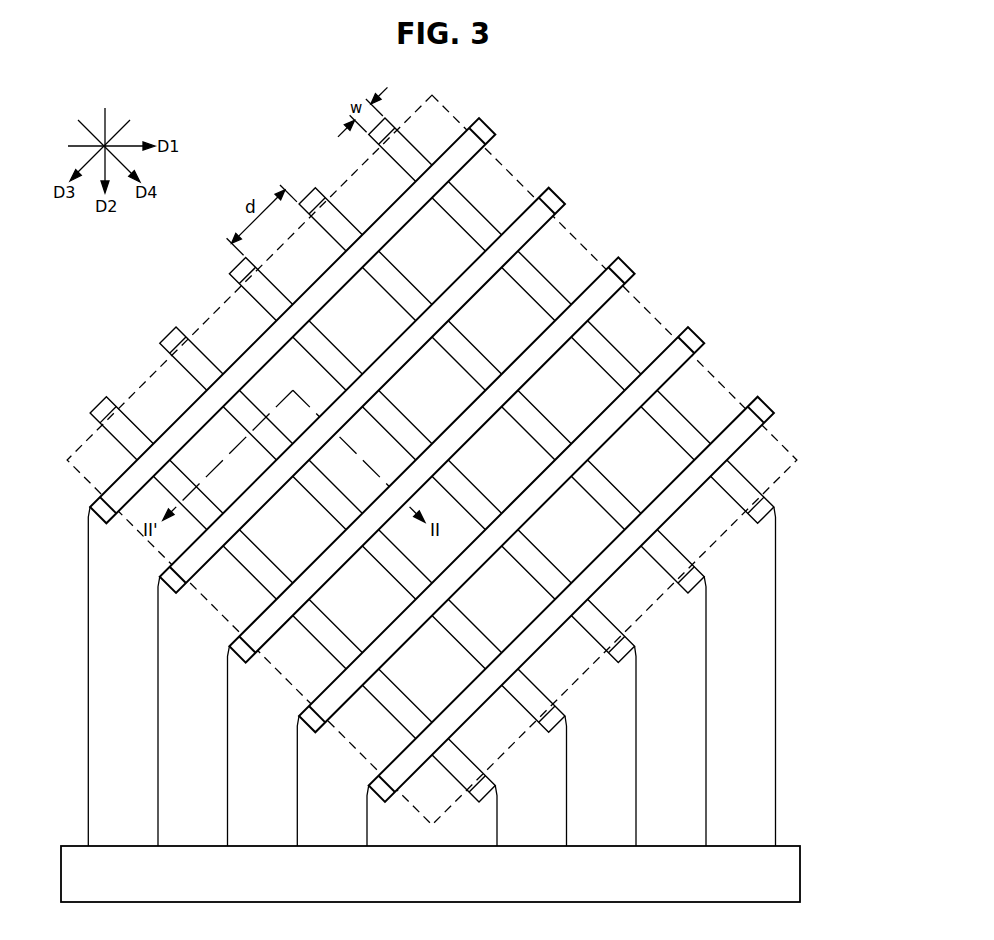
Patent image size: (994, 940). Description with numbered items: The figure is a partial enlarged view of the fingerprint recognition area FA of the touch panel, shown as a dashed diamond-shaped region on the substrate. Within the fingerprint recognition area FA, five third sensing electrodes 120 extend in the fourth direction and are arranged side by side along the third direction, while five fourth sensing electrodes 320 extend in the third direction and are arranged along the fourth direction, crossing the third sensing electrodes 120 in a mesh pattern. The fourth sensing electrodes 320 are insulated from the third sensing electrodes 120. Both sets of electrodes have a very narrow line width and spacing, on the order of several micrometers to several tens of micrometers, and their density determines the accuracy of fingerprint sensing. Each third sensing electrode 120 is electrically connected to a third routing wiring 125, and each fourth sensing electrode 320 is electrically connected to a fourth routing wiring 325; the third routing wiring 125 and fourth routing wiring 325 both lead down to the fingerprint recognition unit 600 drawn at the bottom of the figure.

The third sensing electrode 120 is at (118, 441).
The third routing wiring 125 is at (776, 684).
The fourth sensing electrode 320 is at (769, 400).
The fourth routing wiring 325 is at (88, 688).
The fingerprint recognition unit 600 is at (800, 876).
The fingerprint recognition area FA is at (590, 248).